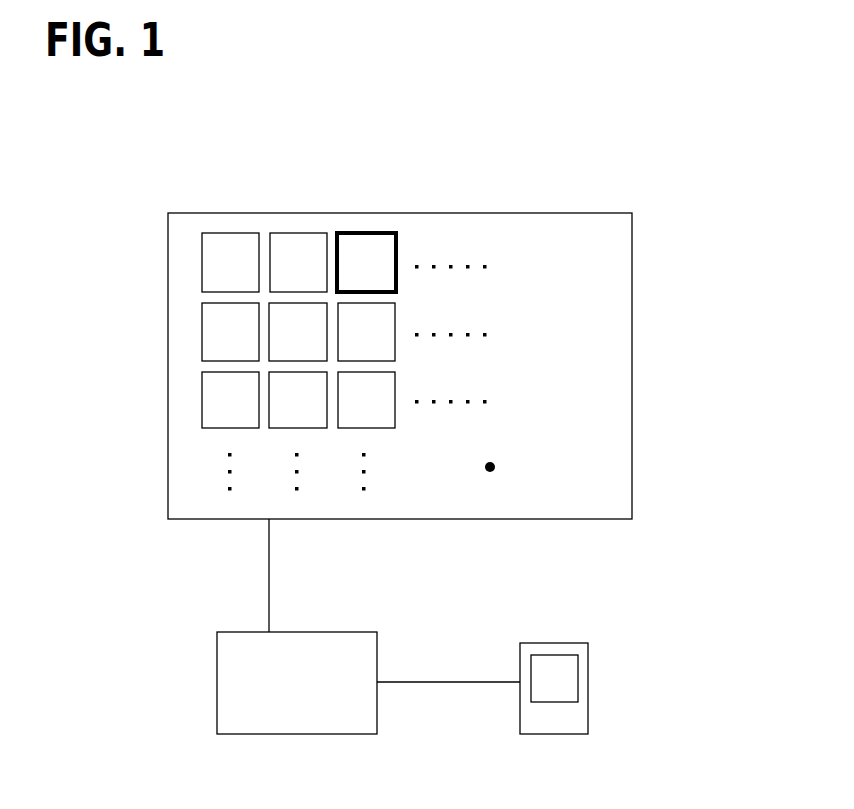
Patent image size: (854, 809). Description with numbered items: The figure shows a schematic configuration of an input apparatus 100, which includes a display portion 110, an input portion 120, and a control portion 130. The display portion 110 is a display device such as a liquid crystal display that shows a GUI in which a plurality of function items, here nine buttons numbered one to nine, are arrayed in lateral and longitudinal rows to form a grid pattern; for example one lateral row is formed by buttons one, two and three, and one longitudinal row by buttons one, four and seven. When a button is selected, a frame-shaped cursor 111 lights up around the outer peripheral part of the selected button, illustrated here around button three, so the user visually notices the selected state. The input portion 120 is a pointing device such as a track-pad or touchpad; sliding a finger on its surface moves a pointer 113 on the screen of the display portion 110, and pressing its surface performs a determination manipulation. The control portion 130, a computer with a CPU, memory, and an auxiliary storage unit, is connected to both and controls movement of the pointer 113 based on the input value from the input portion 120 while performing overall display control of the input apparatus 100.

The input apparatus 100 is at (441, 431).
The display portion 110 is at (632, 310).
The cursor 111 is at (355, 233).
The pointer 113 is at (495, 463).
The input portion 120 is at (545, 643).
The control portion 130 is at (310, 632).